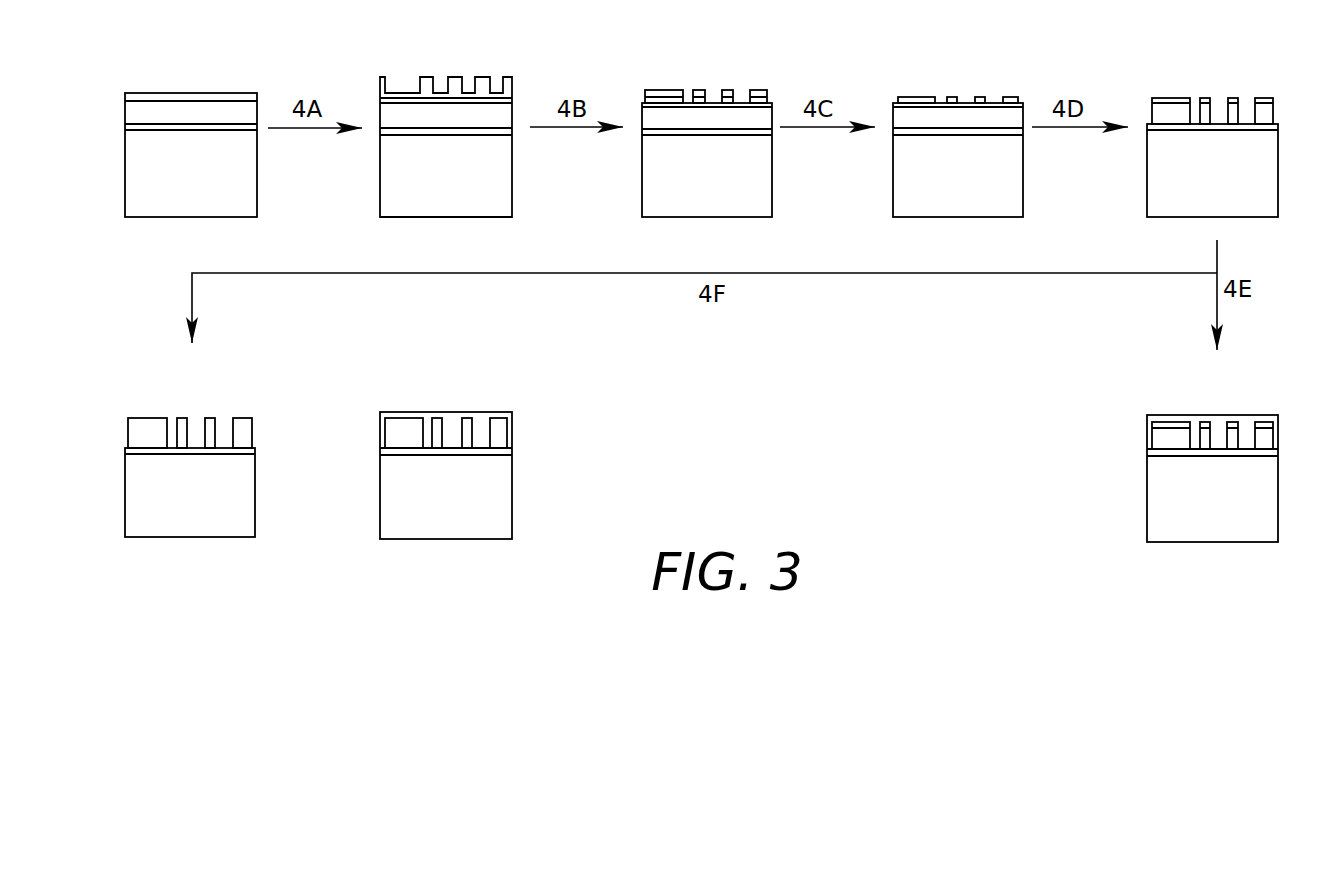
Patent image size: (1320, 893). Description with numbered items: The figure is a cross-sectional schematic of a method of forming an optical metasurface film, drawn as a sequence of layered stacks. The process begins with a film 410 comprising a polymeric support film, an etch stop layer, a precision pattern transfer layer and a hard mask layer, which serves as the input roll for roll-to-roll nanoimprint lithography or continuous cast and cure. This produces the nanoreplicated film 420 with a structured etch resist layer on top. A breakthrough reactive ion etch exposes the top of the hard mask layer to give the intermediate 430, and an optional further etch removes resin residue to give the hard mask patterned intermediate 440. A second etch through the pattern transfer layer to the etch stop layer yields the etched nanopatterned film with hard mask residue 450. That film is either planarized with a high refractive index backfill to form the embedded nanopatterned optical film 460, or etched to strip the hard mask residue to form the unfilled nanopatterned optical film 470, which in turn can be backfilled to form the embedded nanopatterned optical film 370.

The film comprising a polymeric support film, an etch stop layer, a precision patter 410 is at (165, 49).
The nanoreplicated film 420 is at (418, 49).
The intermediate 430 is at (678, 49).
The hard mask patterned intermediate 440 is at (931, 49).
The etched nanopatterned film with hard mask residue 450 is at (1194, 49).
The embedded nanopatterned optical film 460 is at (1197, 381).
The unfilled nanopatterned optical film 470 is at (167, 381).
The embedded nanopatterned optical film 370 is at (425, 381).